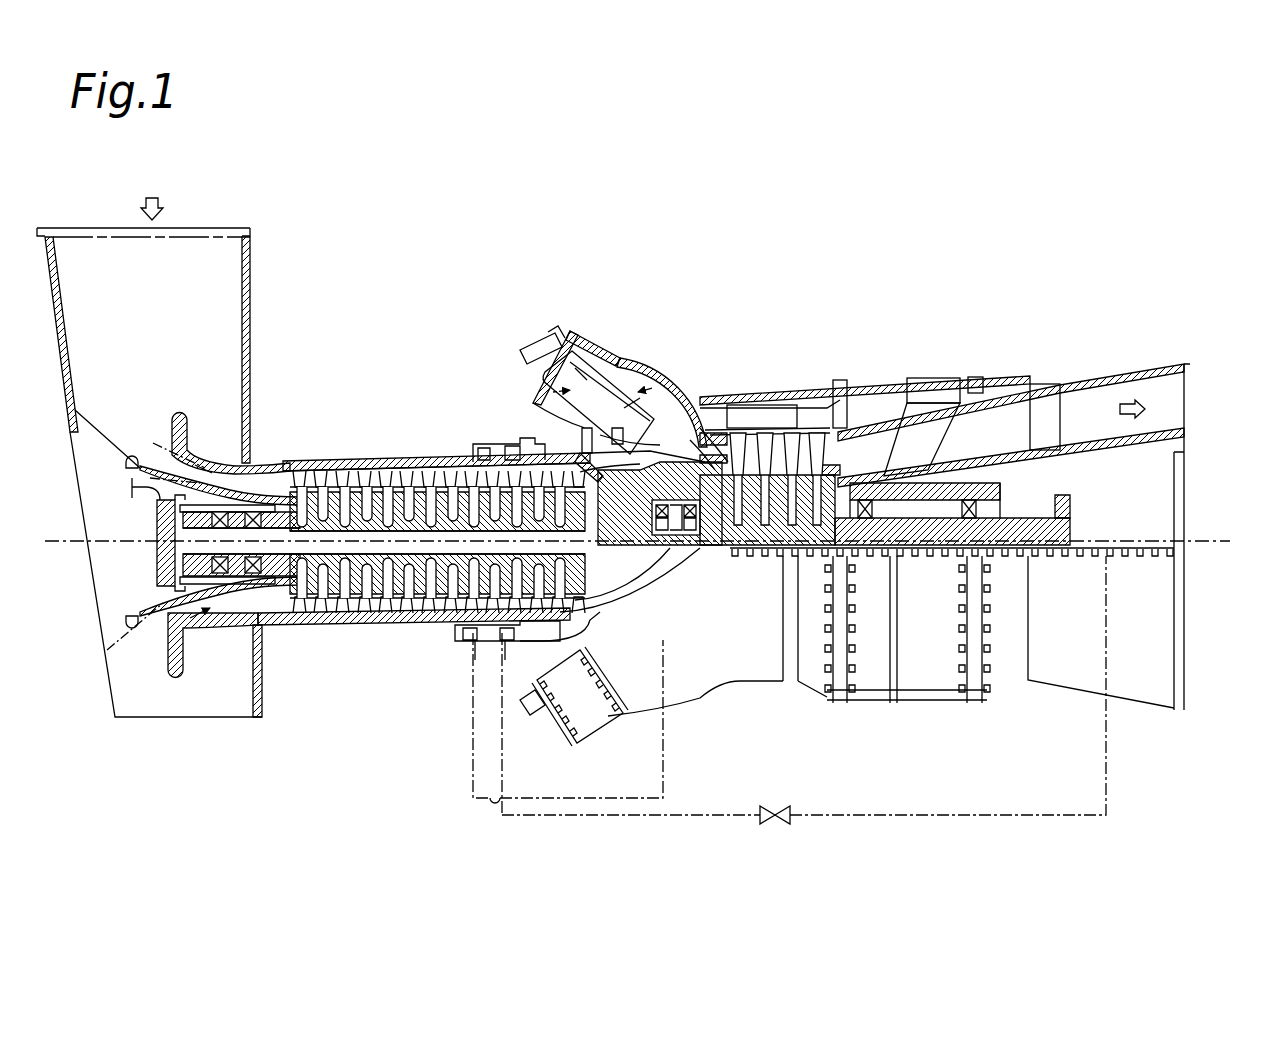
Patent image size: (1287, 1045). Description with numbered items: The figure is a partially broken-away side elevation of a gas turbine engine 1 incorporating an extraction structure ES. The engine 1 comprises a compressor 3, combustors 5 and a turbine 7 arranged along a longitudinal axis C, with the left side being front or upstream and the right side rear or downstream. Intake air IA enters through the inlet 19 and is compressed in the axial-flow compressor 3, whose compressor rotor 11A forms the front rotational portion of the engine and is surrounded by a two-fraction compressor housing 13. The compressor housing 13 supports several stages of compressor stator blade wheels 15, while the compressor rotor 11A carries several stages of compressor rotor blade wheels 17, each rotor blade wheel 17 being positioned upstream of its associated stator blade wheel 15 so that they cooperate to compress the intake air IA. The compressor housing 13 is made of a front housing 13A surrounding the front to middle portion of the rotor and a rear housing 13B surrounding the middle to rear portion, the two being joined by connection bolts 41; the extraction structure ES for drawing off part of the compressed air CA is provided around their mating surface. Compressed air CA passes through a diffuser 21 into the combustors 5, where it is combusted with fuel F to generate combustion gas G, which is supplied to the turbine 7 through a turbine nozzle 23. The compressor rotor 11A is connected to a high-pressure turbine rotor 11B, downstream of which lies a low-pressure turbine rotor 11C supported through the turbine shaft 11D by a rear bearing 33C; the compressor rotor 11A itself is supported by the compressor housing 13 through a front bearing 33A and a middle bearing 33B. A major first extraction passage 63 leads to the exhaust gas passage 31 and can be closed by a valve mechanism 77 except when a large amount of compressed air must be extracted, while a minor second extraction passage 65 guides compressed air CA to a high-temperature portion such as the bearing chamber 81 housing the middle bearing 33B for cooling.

The gas turbine engine 1 is at (400, 282).
The compressor 3 is at (436, 491).
The combustors 5 is at (577, 360).
The turbine 7 is at (800, 425).
The inlet 19 is at (250, 296).
The compressor housing 13 is at (392, 392).
The front housing 13A is at (400, 461).
The rear housing 13B is at (560, 452).
The compressor stator blade wheels 15 is at (392, 510).
The compressor rotor blade wheels 17 is at (425, 525).
The connection bolts 41 is at (470, 451).
The diffuser 21 is at (585, 634).
The turbine nozzle 23 is at (712, 430).
The exhaust gas passage 31 is at (1082, 410).
The front bearing 33A is at (277, 617).
The middle bearing 33B is at (705, 548).
The rear bearing 33C is at (985, 490).
The compressor rotor 11A is at (392, 626).
The high-pressure turbine rotor 11B is at (776, 560).
The low-pressure turbine rotor 11C is at (833, 700).
The turbine shaft 11D is at (1042, 557).
The bearing chamber 81 is at (665, 540).
The valve mechanism 77 is at (790, 808).
The second extraction passage 65 is at (483, 800).
The first extraction passage 63 is at (960, 820).
The intake air IA is at (165, 205).
The fuel F is at (515, 352).
The combustion gas G is at (700, 447).
The compressed air CA is at (598, 402).
The extraction structure ES is at (468, 650).
The longitudinal axis C is at (1222, 541).